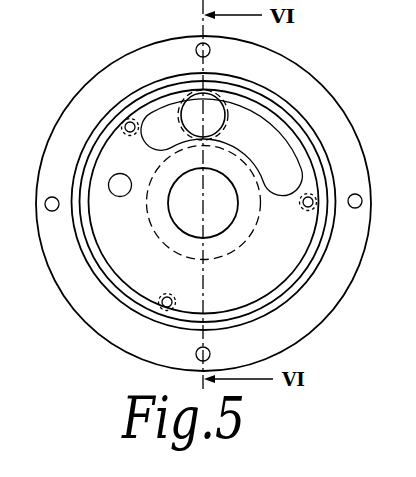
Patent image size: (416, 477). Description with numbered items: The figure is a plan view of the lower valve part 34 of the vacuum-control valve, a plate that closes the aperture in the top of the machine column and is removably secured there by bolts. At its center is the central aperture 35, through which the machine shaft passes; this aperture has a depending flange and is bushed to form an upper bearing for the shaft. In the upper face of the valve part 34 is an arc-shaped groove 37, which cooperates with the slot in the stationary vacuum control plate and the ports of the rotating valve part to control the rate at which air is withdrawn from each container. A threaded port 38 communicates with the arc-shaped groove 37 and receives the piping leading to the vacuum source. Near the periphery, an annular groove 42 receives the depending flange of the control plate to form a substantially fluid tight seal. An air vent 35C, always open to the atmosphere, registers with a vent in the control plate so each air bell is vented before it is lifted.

The valve part 34 is at (365, 175).
The central aperture 35 is at (190, 213).
The air vent 35C is at (117, 185).
The arc-shaped groove 37 is at (302, 178).
The threaded aperture or port 38 is at (223, 119).
The annular groove 42 is at (316, 237).